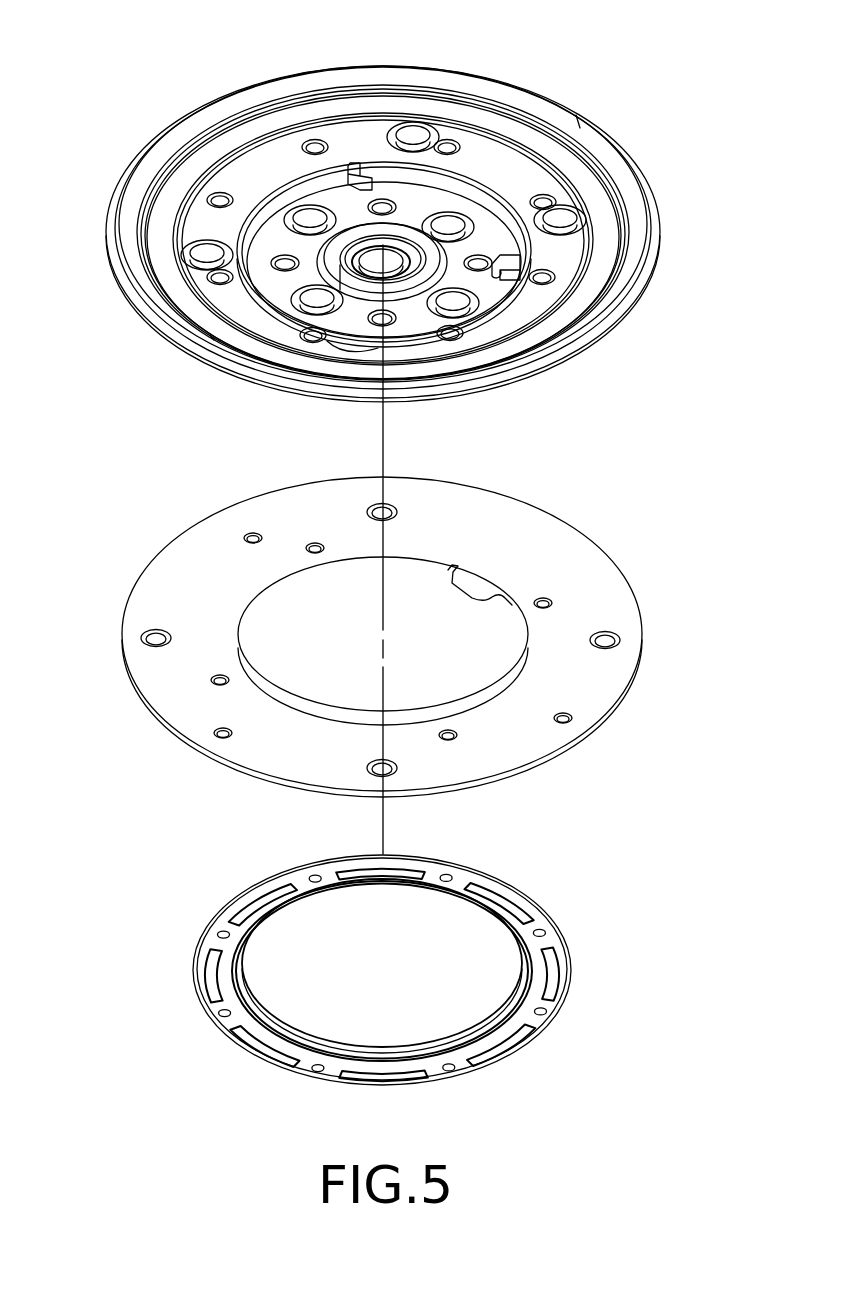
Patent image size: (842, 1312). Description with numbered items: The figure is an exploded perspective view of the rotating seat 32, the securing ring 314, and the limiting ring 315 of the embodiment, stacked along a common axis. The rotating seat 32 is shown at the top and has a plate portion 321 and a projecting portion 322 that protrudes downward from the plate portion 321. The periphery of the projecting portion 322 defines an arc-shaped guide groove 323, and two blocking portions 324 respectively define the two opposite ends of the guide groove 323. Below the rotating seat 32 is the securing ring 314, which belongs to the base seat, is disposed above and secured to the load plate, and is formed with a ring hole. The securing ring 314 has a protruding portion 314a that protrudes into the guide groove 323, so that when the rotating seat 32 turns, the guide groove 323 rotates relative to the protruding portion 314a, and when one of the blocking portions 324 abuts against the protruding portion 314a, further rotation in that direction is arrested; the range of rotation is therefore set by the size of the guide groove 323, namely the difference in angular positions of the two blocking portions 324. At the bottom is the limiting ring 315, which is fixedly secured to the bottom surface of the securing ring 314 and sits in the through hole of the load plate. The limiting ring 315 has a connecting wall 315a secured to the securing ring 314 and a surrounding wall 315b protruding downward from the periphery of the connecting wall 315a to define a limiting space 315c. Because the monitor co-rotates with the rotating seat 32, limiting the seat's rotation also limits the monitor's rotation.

The rotating seat 32 is at (587, 102).
The plate portion 321 is at (618, 153).
The projecting portion 322 is at (498, 295).
The arc-shaped guide groove 323 is at (498, 207).
The blocking portions 324 is at (368, 175).
The securing ring 314 is at (193, 528).
The protruding portion 314a is at (465, 590).
The limiting ring 315 is at (205, 900).
The connecting wall 315a is at (436, 888).
The surrounding wall 315b is at (542, 913).
The limiting space 315c is at (552, 967).